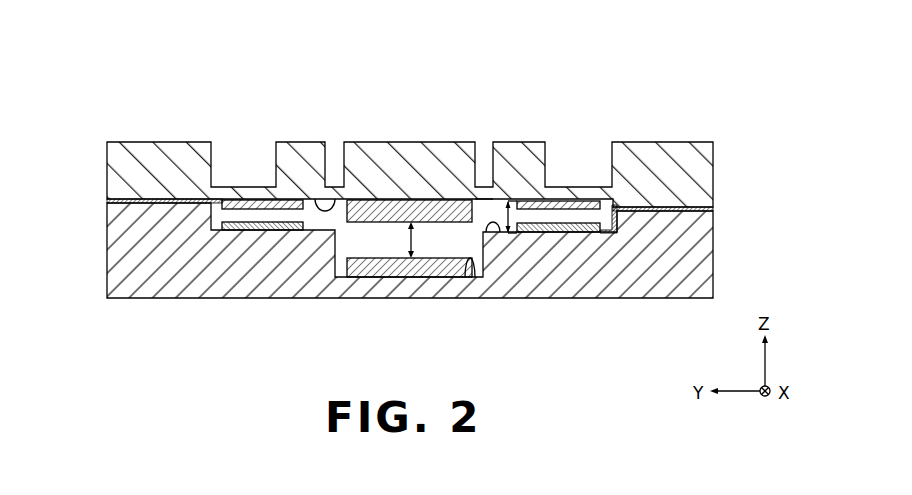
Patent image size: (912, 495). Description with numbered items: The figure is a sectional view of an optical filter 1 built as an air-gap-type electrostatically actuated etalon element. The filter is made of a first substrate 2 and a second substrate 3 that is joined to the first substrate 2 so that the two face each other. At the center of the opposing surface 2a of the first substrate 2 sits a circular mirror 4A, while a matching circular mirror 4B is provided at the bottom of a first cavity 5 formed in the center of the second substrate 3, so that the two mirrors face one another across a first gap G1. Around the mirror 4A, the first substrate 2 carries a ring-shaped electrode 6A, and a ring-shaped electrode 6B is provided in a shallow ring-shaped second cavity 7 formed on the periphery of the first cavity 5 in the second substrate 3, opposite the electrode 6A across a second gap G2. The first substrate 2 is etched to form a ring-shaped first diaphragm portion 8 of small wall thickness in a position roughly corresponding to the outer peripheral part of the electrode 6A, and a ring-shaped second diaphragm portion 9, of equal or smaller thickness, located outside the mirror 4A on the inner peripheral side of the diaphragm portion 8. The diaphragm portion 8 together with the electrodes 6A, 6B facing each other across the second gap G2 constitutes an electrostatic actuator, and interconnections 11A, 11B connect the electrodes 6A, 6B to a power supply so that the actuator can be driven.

The optical filter 1 is at (84, 102).
The first substrate 2 is at (707, 170).
The opposing surface 2a is at (320, 205).
The second substrate 3 is at (707, 265).
The circular mirror 4A is at (388, 204).
The circular mirror 4B is at (400, 278).
The first cavity 5 is at (470, 272).
The ring-shaped electrode 6A is at (572, 200).
The ring-shaped electrode 6B is at (562, 233).
The second cavity 7 is at (492, 233).
The first diaphragm portion 8 is at (592, 196).
The second diaphragm portion 9 is at (484, 197).
The interconnection 11A is at (698, 213).
The interconnection 11B is at (162, 204).
The first gap G1 is at (425, 240).
The second gap G2 is at (526, 200).